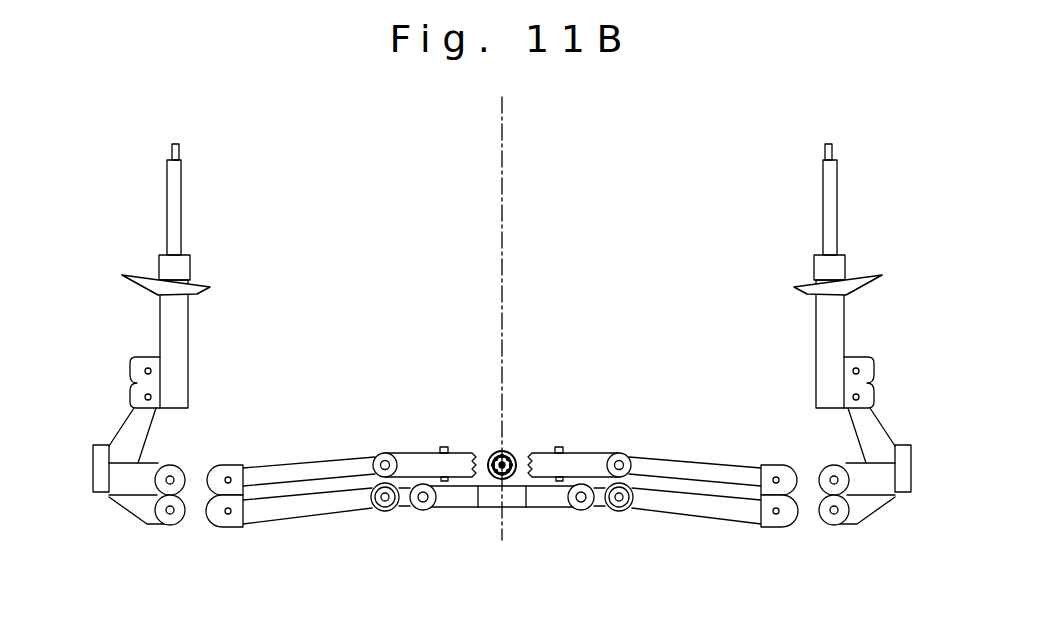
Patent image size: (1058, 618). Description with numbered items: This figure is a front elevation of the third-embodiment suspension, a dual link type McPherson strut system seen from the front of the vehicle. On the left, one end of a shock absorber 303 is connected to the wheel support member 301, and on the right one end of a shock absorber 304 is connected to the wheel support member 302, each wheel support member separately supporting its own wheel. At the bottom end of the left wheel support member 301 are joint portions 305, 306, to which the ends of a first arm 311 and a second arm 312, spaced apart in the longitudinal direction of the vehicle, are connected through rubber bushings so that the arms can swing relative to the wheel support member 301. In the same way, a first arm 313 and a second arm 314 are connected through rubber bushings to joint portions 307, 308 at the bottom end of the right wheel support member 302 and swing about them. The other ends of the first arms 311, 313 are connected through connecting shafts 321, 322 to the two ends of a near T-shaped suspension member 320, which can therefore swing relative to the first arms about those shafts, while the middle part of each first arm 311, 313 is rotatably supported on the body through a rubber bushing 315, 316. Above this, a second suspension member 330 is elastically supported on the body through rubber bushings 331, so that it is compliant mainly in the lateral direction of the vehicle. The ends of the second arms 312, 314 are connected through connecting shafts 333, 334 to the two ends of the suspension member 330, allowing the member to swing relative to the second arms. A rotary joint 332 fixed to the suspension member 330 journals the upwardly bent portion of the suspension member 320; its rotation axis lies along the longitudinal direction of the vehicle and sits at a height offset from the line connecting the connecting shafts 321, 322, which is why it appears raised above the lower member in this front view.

The wheel support member 301 is at (96, 445).
The wheel support member 302 is at (905, 450).
The shock absorber 303 is at (181, 158).
The shock absorber 304 is at (836, 158).
The joint portion 305 is at (228, 514).
The joint portion 306 is at (172, 466).
The joint portion 307 is at (832, 516).
The joint portion 308 is at (832, 466).
The first arm 311 is at (299, 508).
The second arm 312 is at (312, 467).
The first arm 313 is at (701, 508).
The second arm 314 is at (690, 468).
The rubber bushing 315 is at (385, 511).
The rubber bushing 316 is at (618, 511).
The suspension member 320 is at (465, 495).
The connecting shaft 321 is at (423, 511).
The connecting shaft 322 is at (580, 511).
The suspension member 330 is at (583, 458).
The rubber bushing 331 is at (444, 447).
The rotary joint 332 is at (506, 452).
The connecting shaft 333 is at (385, 454).
The connecting shaft 334 is at (624, 455).